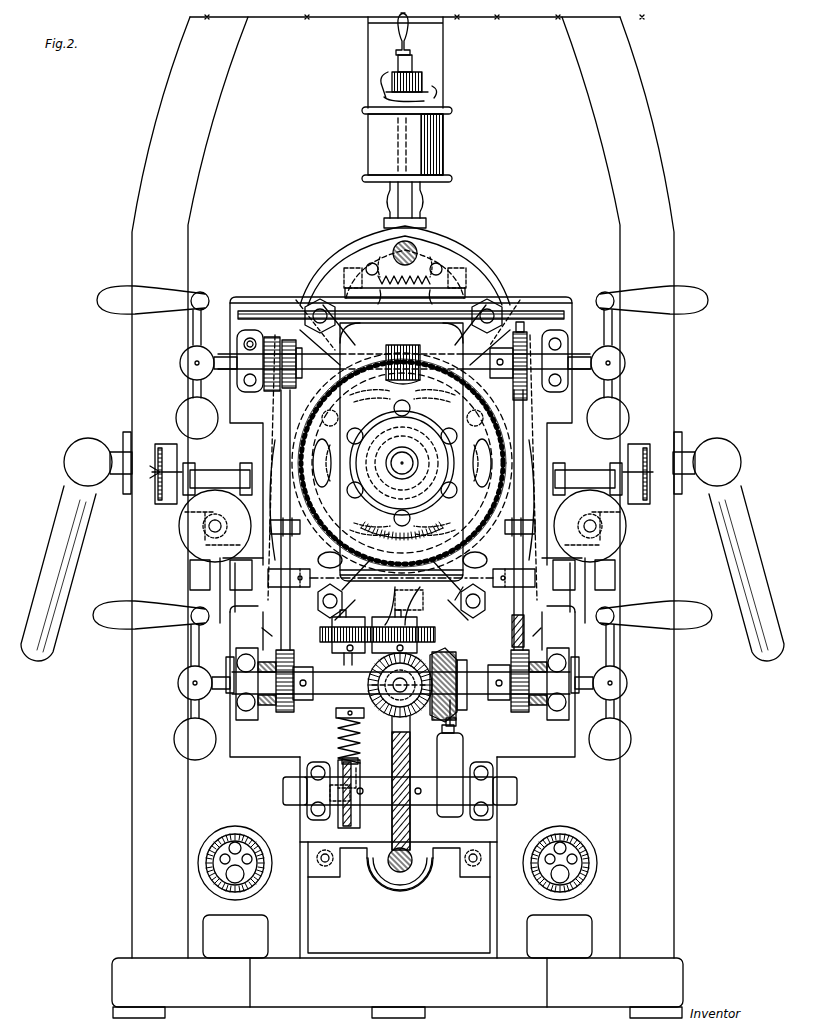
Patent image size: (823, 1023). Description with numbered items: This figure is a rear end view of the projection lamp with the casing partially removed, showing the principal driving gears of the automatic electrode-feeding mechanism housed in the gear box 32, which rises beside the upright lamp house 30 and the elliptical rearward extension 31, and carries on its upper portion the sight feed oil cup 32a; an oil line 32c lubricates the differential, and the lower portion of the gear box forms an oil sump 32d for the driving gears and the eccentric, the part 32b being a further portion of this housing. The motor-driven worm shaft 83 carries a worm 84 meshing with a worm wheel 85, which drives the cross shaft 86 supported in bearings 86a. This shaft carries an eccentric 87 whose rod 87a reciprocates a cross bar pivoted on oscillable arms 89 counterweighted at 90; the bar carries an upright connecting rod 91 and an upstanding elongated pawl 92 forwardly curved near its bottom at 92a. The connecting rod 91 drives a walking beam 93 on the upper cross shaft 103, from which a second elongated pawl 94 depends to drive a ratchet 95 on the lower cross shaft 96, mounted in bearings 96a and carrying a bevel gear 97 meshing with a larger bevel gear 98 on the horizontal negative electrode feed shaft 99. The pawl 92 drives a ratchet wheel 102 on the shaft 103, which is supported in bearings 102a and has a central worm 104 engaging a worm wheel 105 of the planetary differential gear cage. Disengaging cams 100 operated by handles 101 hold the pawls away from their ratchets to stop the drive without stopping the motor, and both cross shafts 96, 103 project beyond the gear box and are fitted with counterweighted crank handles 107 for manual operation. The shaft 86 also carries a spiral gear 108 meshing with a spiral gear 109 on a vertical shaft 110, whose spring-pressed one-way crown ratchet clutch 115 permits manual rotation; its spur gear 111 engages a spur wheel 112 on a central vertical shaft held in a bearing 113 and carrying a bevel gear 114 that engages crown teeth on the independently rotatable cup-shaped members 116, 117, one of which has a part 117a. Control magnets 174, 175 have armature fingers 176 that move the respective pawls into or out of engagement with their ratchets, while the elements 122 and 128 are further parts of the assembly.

The lamp house 30 is at (600, 278).
The rearward extension 31 is at (470, 272).
The gear box 32 is at (480, 292).
The sight feed oil cup 32a is at (430, 158).
The housing part 32b is at (442, 293).
The oil line 32c is at (367, 293).
The oil sump 32d is at (487, 842).
The worm shaft 83 is at (390, 870).
The worm 84 is at (410, 866).
The worm wheel 85 is at (410, 834).
The cross shaft 86 is at (420, 795).
The bearings 86a is at (522, 800).
The eccentric 87 is at (463, 748).
The eccentric rod 87a is at (446, 722).
The oscillable arms 89 is at (270, 656).
The counterweight 90 is at (400, 626).
The connecting rod 91 is at (287, 340).
The pawl 92 is at (520, 446).
The forwardly curved portion 92a is at (512, 640).
The walking beam 93 is at (270, 340).
The pawl 94 is at (285, 438).
The ratchet 95 is at (280, 712).
The cross shaft 96 is at (318, 700).
The bearings 96a is at (588, 660).
The bevel gear 97 is at (455, 695).
The bevel gear 98 is at (462, 718).
The negative electrode feed shaft 99 is at (392, 716).
The disengaging cams 100 is at (285, 590).
The handle 101 is at (222, 598).
The ratchet wheel 102 is at (522, 340).
The bearings 102a is at (628, 332).
The cross shaft 103 is at (475, 338).
The worm 104 is at (403, 345).
The worm wheel 105 is at (385, 350).
The crank handles 107 is at (182, 364).
The spiral gear 108 is at (358, 824).
The spiral gear 109 is at (362, 780).
The vertical shaft 110 is at (336, 716).
The spur gear 111 is at (330, 640).
The spur wheel 112 is at (436, 636).
The bearing 113 is at (408, 600).
The bevel gear 114 is at (348, 606).
The one-way crown ratchet clutch 115 is at (338, 752).
The cup-shaped member 116 is at (322, 540).
The cup-shaped member 117 is at (332, 548).
The gear wheel part 117a is at (460, 520).
The belt 122 is at (295, 416).
The arm 128 is at (312, 318).
The magnet 174 is at (182, 528).
The magnet 175 is at (610, 530).
The finger 176 is at (280, 528).